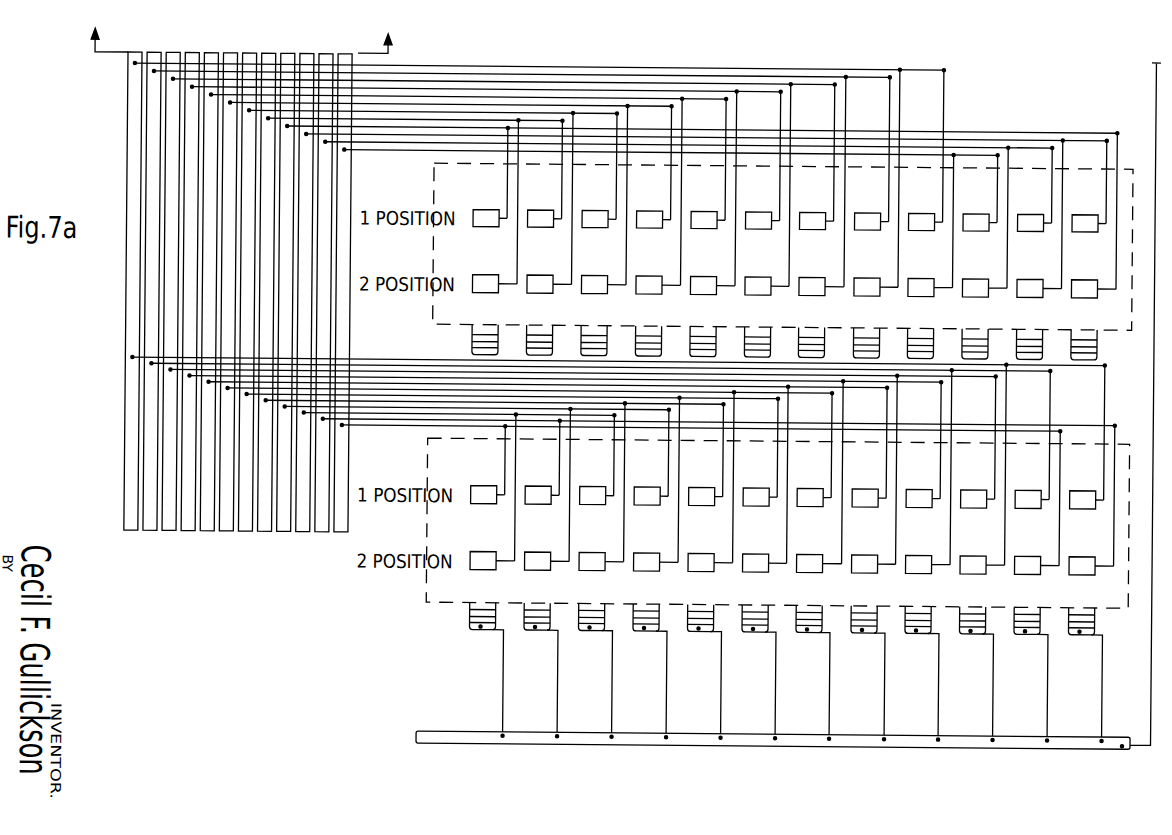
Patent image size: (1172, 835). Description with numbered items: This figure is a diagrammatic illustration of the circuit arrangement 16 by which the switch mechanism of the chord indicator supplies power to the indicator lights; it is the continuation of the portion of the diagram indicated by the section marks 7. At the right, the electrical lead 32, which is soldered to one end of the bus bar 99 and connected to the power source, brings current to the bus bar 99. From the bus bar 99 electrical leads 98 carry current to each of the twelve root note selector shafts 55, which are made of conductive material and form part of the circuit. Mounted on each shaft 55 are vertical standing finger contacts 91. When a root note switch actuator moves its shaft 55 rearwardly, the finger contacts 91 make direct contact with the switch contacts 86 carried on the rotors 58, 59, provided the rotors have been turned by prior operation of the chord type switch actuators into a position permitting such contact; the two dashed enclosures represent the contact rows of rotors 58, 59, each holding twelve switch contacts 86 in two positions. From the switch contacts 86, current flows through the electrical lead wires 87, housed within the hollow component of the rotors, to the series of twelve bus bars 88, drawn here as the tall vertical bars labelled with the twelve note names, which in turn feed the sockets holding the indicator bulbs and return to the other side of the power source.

The section line 7- 7 is at (242, 32).
The circuit arrangement 16 is at (790, 336).
The electrical lead 32 is at (1152, 94).
The root note selector shaft 55 is at (1096, 356).
The rotor 58 is at (1129, 575).
The rotor 59 is at (1131, 312).
The switch contact 86 is at (714, 228).
The electrical lead wire 87 is at (465, 68).
The bus bar 88 is at (160, 490).
The finger contact 91 is at (1097, 342).
The electrical lead 98 is at (505, 661).
The bus bar 99 is at (416, 732).